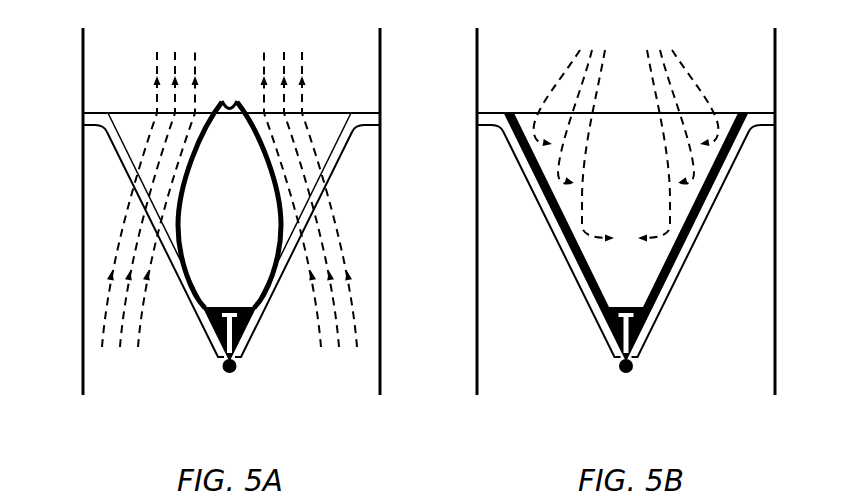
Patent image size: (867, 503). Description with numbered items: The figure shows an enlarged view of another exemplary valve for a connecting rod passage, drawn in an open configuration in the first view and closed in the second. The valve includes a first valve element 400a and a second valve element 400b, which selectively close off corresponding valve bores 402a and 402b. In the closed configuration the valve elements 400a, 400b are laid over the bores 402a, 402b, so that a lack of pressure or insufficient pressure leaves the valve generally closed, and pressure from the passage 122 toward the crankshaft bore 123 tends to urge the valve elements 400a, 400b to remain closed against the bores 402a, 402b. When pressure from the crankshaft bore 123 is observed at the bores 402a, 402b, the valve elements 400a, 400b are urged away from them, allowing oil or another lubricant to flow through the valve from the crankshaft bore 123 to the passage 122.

In FIG. 5A, the passage 122 is at (247, 41).
In FIG. 5B, the passage 122 is at (642, 31).
In FIG. 5A, the crankshaft bore 123 is at (247, 414).
In FIG. 5B, the crankshaft bore 123 is at (638, 411).
In FIG. 5A, the first valve element 400a is at (198, 138).
In FIG. 5B, the first valve element 400a is at (537, 186).
In FIG. 5A, the second valve element 400b is at (263, 143).
In FIG. 5B, the second valve element 400b is at (668, 180).
In FIG. 5A, the valve bore 402a is at (142, 212).
In FIG. 5B, the valve bore 402a is at (545, 245).
In FIG. 5A, the valve bore 402b is at (318, 213).
In FIG. 5B, the valve bore 402b is at (703, 240).